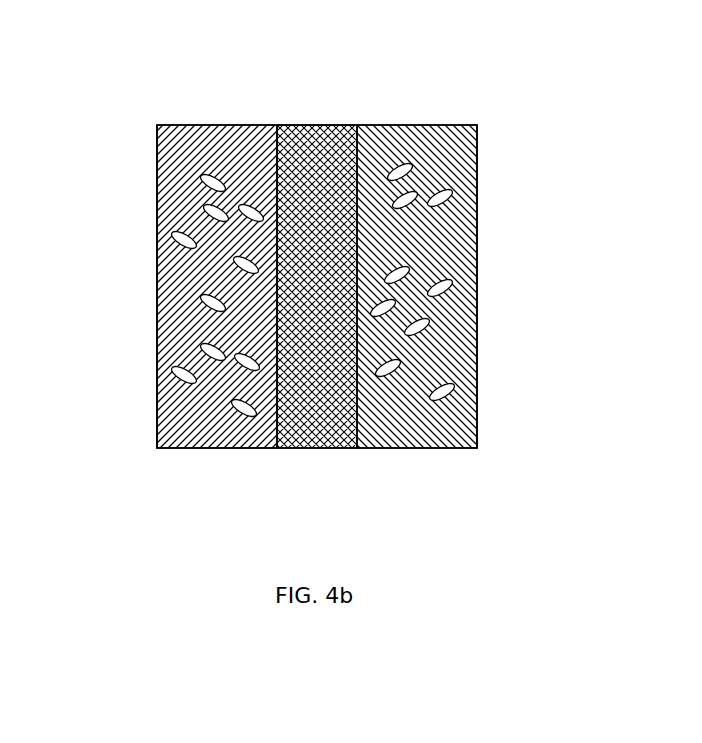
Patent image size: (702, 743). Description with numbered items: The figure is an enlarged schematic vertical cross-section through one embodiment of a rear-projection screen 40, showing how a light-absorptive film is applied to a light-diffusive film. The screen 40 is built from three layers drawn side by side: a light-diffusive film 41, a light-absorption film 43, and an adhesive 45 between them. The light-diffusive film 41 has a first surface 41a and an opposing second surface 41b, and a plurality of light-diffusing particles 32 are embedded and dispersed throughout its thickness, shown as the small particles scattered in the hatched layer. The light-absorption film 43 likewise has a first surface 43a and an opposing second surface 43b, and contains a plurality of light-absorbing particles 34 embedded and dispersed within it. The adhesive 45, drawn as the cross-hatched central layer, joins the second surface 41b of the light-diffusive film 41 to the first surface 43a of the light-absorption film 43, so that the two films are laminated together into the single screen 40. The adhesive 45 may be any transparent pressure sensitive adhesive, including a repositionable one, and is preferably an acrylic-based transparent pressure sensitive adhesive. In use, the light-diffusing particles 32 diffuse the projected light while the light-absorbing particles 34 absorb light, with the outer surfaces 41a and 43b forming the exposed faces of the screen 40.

The rear-projection screen 40 is at (317, 113).
The light-diffusive film 41 is at (225, 275).
The first surface 41a is at (190, 326).
The second surface 41b is at (277, 165).
The light-diffusing particles 32 is at (157, 388).
The adhesive 45 is at (315, 447).
The light-absorption film 43 is at (447, 262).
The first surface 43a is at (415, 232).
The second surface 43b is at (465, 325).
The light-absorbing particles 34 is at (477, 403).